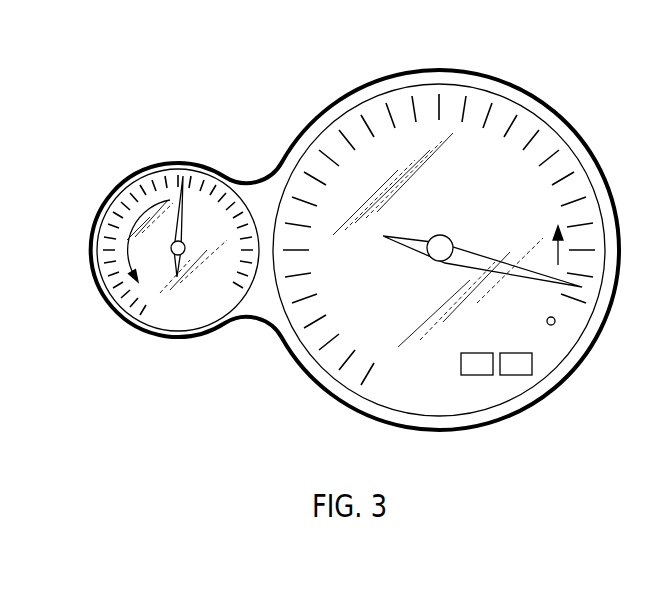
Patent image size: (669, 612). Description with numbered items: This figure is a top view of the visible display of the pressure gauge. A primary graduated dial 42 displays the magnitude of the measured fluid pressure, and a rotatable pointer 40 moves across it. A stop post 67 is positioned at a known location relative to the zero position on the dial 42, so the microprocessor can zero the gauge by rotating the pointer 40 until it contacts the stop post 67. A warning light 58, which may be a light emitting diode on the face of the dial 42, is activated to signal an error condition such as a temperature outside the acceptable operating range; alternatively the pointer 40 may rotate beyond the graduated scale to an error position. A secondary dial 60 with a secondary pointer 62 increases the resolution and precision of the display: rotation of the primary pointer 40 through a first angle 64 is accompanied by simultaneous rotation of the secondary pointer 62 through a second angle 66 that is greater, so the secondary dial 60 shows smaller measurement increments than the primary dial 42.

The pointer 40 is at (472, 255).
The graduated dial 42 is at (393, 146).
The warning light 58 is at (518, 365).
The secondary dial 60 is at (180, 308).
The secondary pointer 62 is at (185, 232).
The first angle 64 is at (558, 265).
The second angle 66 is at (123, 258).
The stop post 67 is at (553, 325).